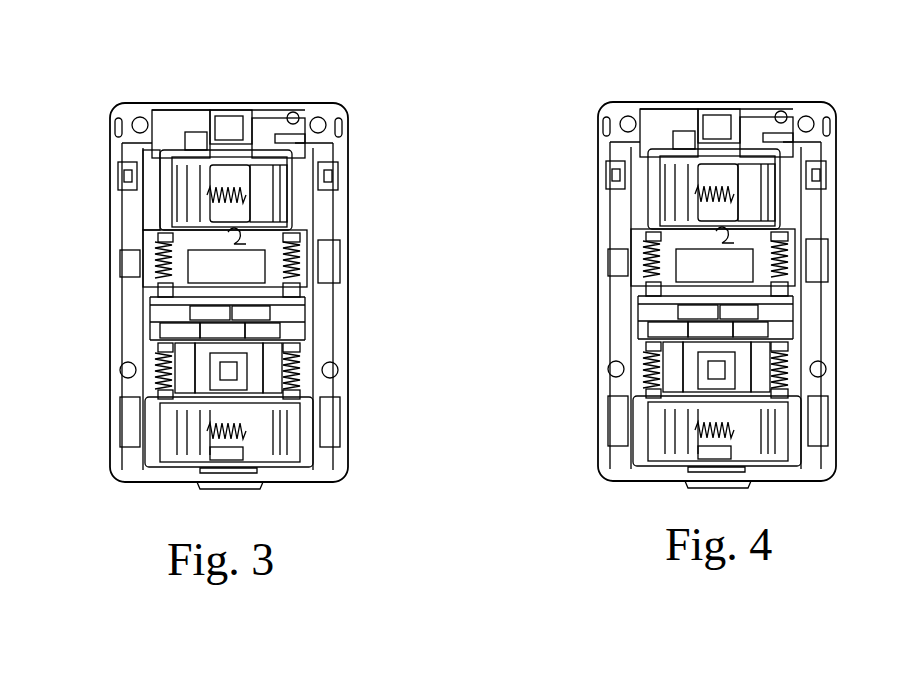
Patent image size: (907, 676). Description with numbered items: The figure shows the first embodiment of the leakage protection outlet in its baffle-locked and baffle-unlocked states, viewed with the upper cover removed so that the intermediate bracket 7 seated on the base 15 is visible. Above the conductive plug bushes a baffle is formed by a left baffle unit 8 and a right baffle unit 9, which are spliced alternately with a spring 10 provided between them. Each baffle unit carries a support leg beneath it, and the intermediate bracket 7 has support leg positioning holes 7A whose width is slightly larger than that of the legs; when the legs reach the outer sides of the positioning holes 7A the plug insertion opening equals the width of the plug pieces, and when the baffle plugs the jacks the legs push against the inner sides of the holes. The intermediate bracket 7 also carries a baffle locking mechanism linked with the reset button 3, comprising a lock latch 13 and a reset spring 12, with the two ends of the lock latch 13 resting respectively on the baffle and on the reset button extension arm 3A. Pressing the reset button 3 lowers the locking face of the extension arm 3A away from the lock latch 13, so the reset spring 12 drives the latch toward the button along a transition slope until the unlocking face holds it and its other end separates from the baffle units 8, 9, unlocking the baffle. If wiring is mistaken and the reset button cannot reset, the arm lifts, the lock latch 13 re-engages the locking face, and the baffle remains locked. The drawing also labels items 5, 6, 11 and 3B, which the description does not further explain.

In FIG. 3, the base 15 is at (130, 113).
In FIG. 4, the base 15 is at (683, 280).
In FIG. 3, the intermediate bracket 7 is at (172, 128).
In FIG. 4, the intermediate bracket 7 is at (668, 99).
In FIG. 3, the support leg positioning holes 7A is at (160, 200).
In FIG. 3, the spring 10 is at (237, 185).
In FIG. 4, the spring 10 is at (717, 131).
In FIG. 3, the left baffle unit 8 is at (182, 167).
In FIG. 4, the left baffle unit 8 is at (660, 189).
In FIG. 3, the right baffle unit 9 is at (280, 172).
In FIG. 4, the right baffle unit 9 is at (812, 179).
In FIG. 4, the side latch 11 is at (587, 252).
In FIG. 3, the reset spring 12 is at (300, 268).
In FIG. 4, the reset spring 12 is at (828, 252).
In FIG. 3, the lock latch 13 is at (290, 290).
In FIG. 4, the lock latch 13 is at (829, 291).
In FIG. 3, the carrier bar 6 is at (150, 305).
In FIG. 4, the carrier bar 6 is at (671, 317).
In FIG. 3, the left latch arm 3B is at (160, 332).
In FIG. 3, the reset button 3 is at (213, 328).
In FIG. 4, the reset button 3 is at (641, 361).
In FIG. 3, the reset button extension arm 3A is at (280, 333).
In FIG. 4, the reset button extension arm 3A is at (813, 322).
In FIG. 3, the lower right spring 5 is at (315, 386).
In FIG. 4, the lower right spring 5 is at (828, 370).